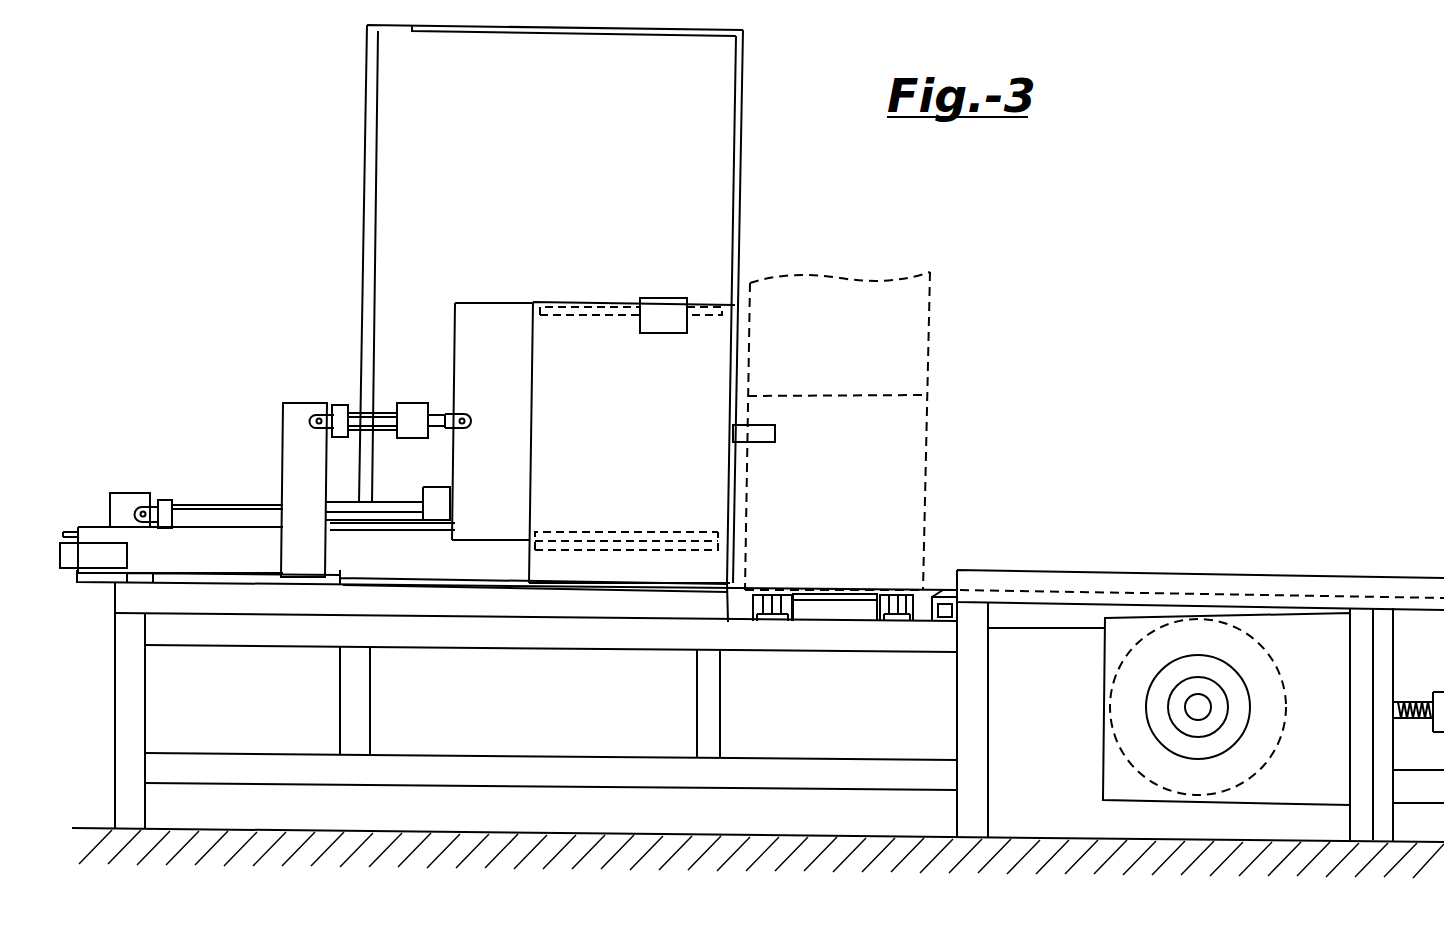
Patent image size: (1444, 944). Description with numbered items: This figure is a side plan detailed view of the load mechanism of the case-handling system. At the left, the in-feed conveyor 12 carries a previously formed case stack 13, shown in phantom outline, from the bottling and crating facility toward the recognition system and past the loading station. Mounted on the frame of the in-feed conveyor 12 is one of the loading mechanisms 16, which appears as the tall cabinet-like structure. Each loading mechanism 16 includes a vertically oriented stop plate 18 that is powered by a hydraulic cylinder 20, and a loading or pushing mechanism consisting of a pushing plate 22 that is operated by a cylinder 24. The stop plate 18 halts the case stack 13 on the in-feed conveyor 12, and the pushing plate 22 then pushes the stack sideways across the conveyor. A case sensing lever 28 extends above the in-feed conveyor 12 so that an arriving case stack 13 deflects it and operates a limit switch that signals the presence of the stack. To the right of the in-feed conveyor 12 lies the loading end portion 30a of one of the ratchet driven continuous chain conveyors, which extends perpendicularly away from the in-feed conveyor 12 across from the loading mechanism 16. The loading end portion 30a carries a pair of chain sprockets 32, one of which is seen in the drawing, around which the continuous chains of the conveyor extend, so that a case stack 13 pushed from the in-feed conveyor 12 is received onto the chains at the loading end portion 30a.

The in-feed conveyor 12 is at (858, 657).
The case stack 13 is at (930, 362).
The loading mechanism 16 is at (341, 228).
The stop plate 18 is at (492, 305).
The hydraulic cylinder 20 is at (382, 405).
The pushing plate 22 is at (738, 197).
The cylinder 24 is at (217, 503).
The case sensing lever 28 is at (775, 425).
The loading end portion 30a is at (1178, 566).
The chain sprocket 32 is at (1115, 743).